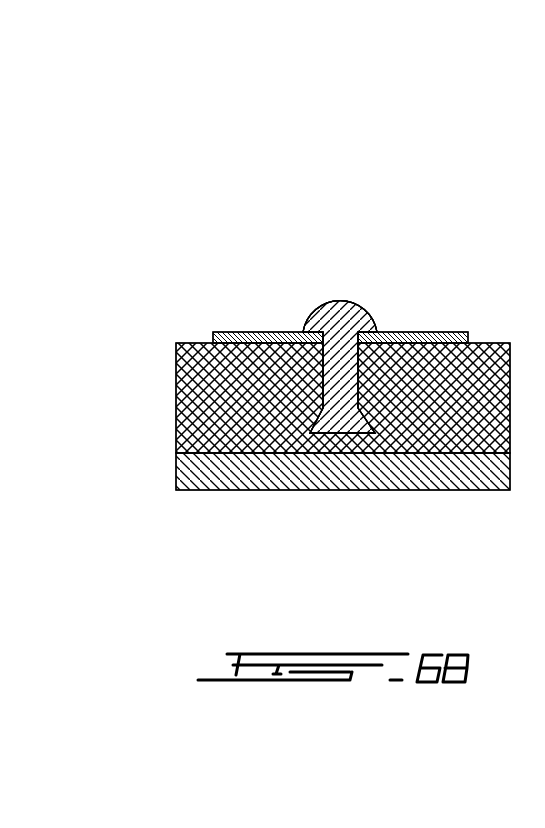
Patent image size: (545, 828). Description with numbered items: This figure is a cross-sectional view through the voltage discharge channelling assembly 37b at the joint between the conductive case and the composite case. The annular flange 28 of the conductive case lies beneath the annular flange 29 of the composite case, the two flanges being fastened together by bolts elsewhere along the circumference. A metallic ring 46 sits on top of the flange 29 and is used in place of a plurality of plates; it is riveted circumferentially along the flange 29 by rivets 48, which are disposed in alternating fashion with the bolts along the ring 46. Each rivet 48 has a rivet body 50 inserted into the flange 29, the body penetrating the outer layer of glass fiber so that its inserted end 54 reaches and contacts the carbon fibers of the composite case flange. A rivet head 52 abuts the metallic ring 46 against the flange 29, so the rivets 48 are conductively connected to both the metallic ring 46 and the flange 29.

The bond pad structure 37b is at (320, 336).
The annular flange 28 is at (253, 491).
The annular flange 29 is at (465, 392).
The metallic ring 46 is at (427, 322).
The rivet 48 is at (342, 283).
The rivet body 50 is at (320, 382).
The rivet head 52 is at (326, 322).
The via base 54 is at (358, 434).